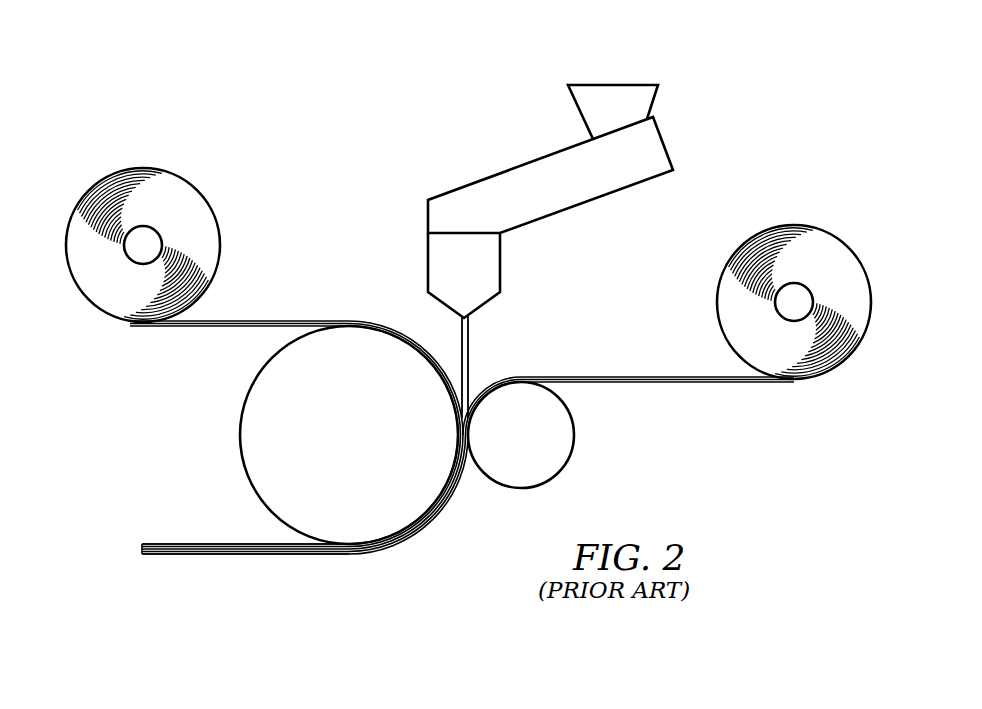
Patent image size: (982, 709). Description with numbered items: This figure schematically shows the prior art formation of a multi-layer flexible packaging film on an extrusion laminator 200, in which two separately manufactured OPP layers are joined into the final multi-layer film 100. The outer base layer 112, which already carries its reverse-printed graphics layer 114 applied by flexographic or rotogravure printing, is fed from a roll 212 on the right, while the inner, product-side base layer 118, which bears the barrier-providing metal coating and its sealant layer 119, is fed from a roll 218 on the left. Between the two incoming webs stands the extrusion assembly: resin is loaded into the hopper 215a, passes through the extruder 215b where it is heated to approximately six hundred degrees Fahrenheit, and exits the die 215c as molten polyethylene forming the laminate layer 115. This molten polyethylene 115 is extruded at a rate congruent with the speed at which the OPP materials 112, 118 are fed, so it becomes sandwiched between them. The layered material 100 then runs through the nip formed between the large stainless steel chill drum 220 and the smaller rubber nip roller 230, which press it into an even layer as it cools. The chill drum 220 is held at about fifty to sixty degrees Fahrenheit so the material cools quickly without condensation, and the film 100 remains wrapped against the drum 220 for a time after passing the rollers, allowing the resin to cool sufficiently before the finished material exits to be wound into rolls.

The extrusion laminator 200 is at (339, 134).
The roll 218 is at (82, 197).
The roll 212 is at (834, 238).
The chill drum 220 is at (240, 452).
The nip roller 230 is at (573, 449).
The inner base layer 118 is at (268, 320).
The sealant layer 119 is at (218, 328).
The graphics layer 114 is at (652, 376).
The outer base layer 112 is at (699, 384).
The multi-layer film 100 is at (198, 555).
The hopper 215a is at (627, 85).
The extruder 215b is at (664, 146).
The die 215c is at (500, 265).
The laminate layer 115 is at (469, 344).